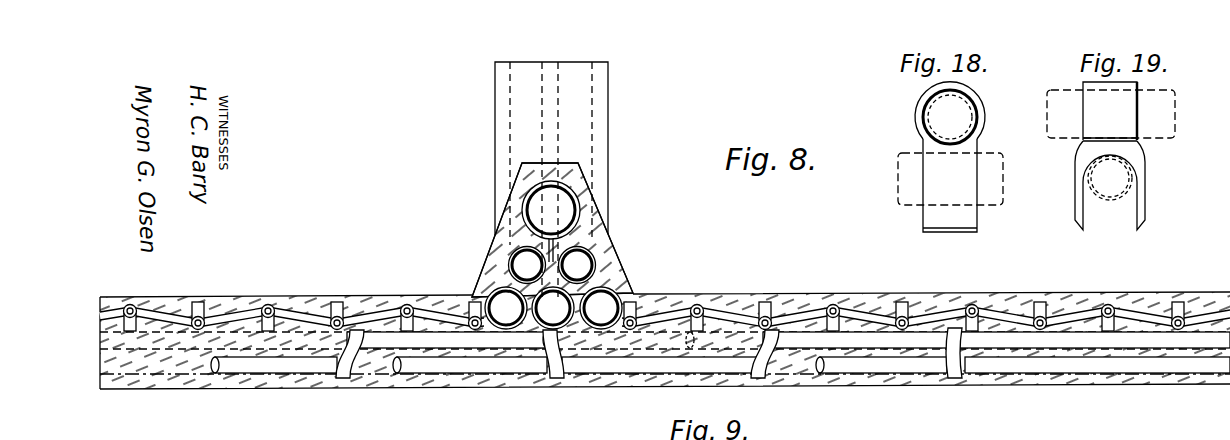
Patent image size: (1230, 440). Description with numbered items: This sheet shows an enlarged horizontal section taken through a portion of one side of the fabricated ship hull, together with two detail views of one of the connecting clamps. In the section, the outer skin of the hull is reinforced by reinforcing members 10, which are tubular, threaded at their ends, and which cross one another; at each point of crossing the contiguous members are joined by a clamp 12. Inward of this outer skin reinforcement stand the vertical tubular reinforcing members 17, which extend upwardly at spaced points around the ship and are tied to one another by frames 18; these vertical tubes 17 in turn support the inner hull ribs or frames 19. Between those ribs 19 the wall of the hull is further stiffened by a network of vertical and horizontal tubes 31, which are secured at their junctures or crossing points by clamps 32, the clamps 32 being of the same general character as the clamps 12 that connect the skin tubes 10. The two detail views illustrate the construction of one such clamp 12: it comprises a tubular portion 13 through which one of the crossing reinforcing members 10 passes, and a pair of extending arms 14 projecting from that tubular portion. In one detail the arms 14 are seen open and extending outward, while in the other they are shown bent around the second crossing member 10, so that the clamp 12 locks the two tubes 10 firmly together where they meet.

In FIG. 8, the reinforcing member 10 is at (500, 367).
In FIG. 18, the reinforcing member 10 is at (977, 122).
In FIG. 19, the reinforcing member 10 is at (1162, 112).
In FIG. 8, the clamp 12 is at (958, 368).
In FIG. 18, the clamp 12 is at (932, 145).
In FIG. 19, the clamp 12 is at (1137, 137).
In FIG. 18, the tubular portion 13 is at (970, 213).
In FIG. 19, the tubular portion 13 is at (1097, 102).
In FIG. 18, the extending arms 14 is at (922, 107).
In FIG. 19, the extending arms 14 is at (1083, 212).
In FIG. 8, the vertical tubular reinforcing member 17 is at (515, 261).
In FIG. 8, the frame 18 is at (605, 268).
In FIG. 8, the inner hull rib 19 is at (573, 242).
In FIG. 8, the vertical and horizontal tubes 31 is at (268, 303).
In FIG. 8, the clamp 32 is at (337, 308).